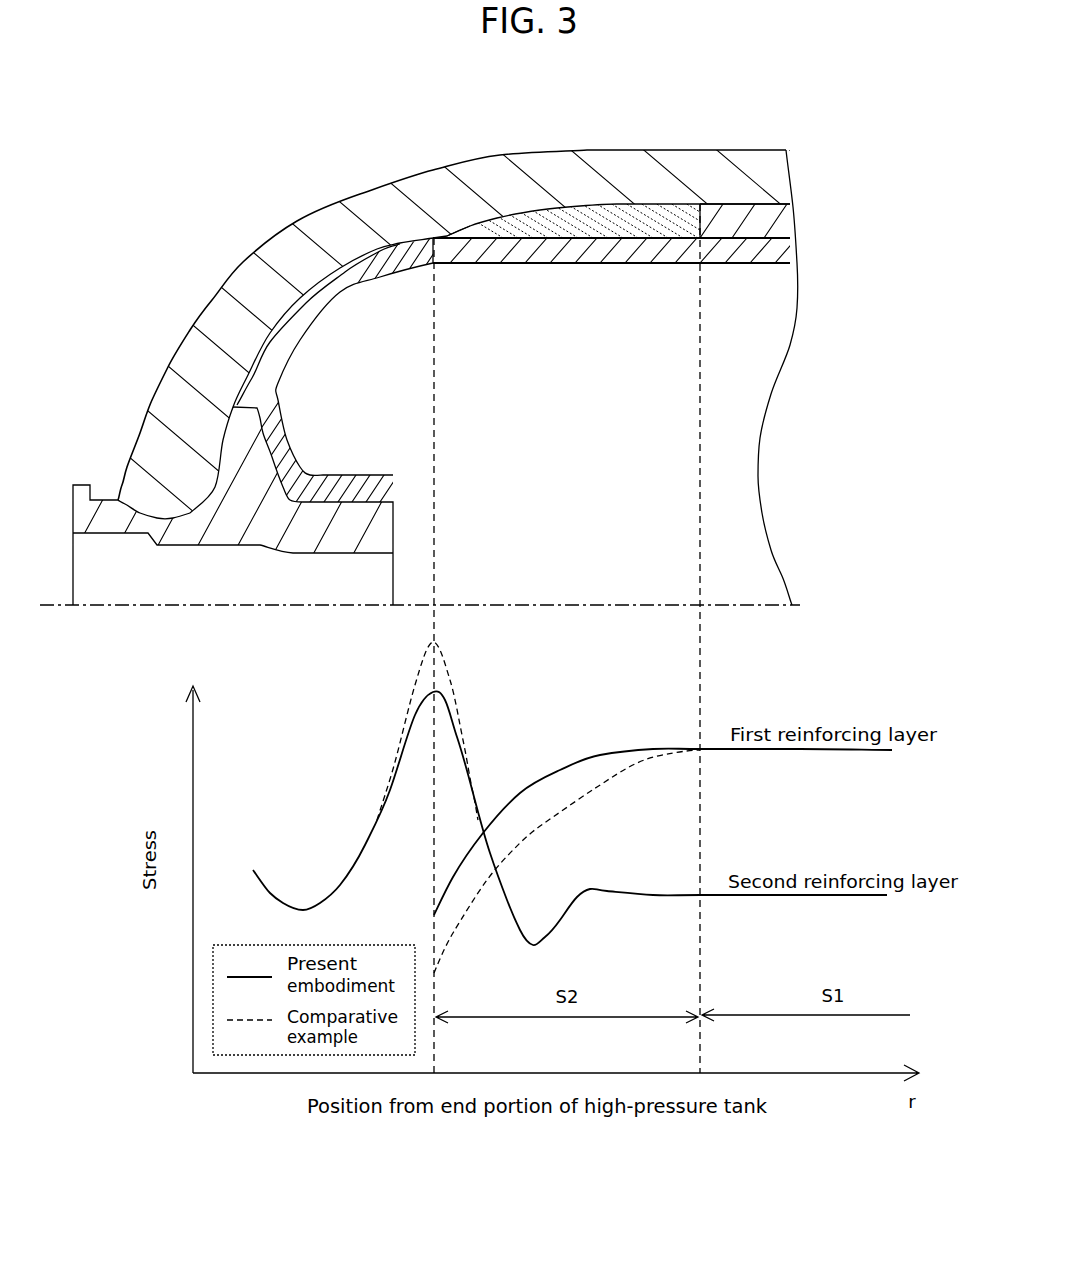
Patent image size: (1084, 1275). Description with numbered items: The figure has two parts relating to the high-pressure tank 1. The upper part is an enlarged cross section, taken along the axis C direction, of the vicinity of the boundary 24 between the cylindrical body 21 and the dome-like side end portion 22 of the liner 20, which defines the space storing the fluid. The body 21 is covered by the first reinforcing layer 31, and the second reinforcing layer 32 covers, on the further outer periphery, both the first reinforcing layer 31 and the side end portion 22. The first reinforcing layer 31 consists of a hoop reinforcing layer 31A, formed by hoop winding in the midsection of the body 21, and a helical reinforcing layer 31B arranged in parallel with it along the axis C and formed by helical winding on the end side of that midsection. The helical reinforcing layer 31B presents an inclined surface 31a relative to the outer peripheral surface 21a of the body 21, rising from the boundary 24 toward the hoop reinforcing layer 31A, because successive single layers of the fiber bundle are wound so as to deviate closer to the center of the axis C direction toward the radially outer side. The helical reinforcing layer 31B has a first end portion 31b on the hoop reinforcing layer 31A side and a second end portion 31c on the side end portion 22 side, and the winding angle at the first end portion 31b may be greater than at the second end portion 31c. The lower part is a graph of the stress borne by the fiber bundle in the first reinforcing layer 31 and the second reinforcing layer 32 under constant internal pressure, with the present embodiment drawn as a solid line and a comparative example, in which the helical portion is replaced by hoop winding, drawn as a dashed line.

The high-pressure tank 1 is at (219, 134).
The liner 20 is at (750, 263).
The body 21 is at (612, 262).
The surface 21a is at (547, 241).
The side end portion 22 is at (352, 273).
The boundary 24 is at (450, 244).
The first reinforcing layer 31 is at (677, 217).
The hoop reinforcing layer 31A is at (740, 220).
The helical reinforcing layer 31B is at (580, 220).
The inclined surface 31a is at (517, 213).
The first end portion 31b is at (693, 240).
The second end portion 31c is at (449, 233).
The second reinforcing layer 32 is at (318, 222).
The axis C is at (598, 600).